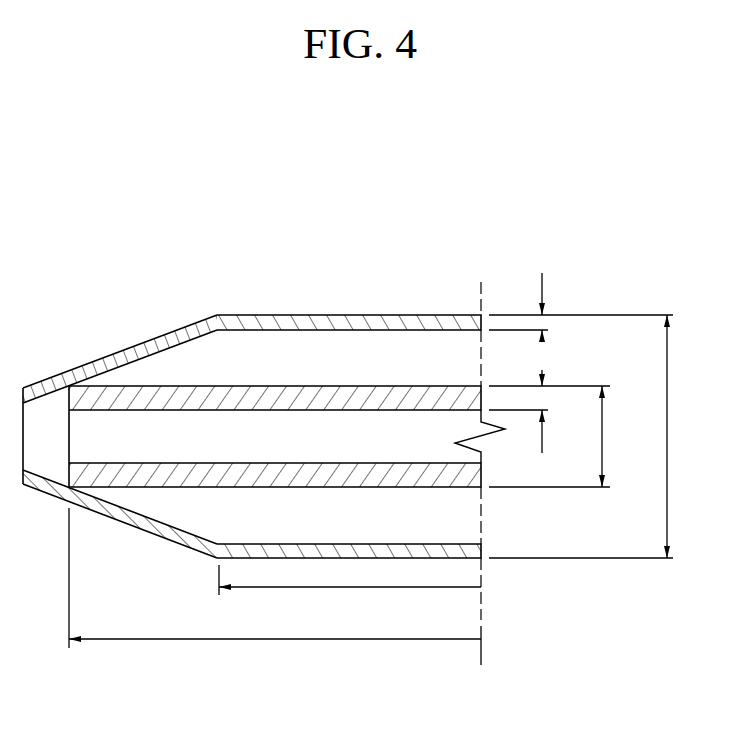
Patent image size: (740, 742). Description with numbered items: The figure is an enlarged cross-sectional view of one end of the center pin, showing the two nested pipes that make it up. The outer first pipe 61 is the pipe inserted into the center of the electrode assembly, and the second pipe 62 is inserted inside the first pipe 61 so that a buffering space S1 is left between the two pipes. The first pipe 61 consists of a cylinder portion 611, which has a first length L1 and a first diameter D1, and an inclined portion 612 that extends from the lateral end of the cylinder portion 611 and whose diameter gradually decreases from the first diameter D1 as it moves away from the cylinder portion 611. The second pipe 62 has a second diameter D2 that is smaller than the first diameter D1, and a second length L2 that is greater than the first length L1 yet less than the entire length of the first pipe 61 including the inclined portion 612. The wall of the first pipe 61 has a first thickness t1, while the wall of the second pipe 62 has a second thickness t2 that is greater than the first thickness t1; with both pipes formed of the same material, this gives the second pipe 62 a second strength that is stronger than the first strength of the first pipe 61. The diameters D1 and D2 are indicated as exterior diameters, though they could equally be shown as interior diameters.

The first pipe 61 is at (252, 376).
The cylinder portion 611 is at (257, 316).
The inclined portion 612 is at (172, 331).
The second pipe 62 is at (359, 397).
The buffering space S1 is at (423, 353).
The first thickness t1 is at (581, 307).
The second thickness t2 is at (549, 414).
The first diameter D1 is at (593, 436).
The second diameter D2 is at (561, 436).
The first length L1 is at (350, 593).
The second length L2 is at (275, 591).